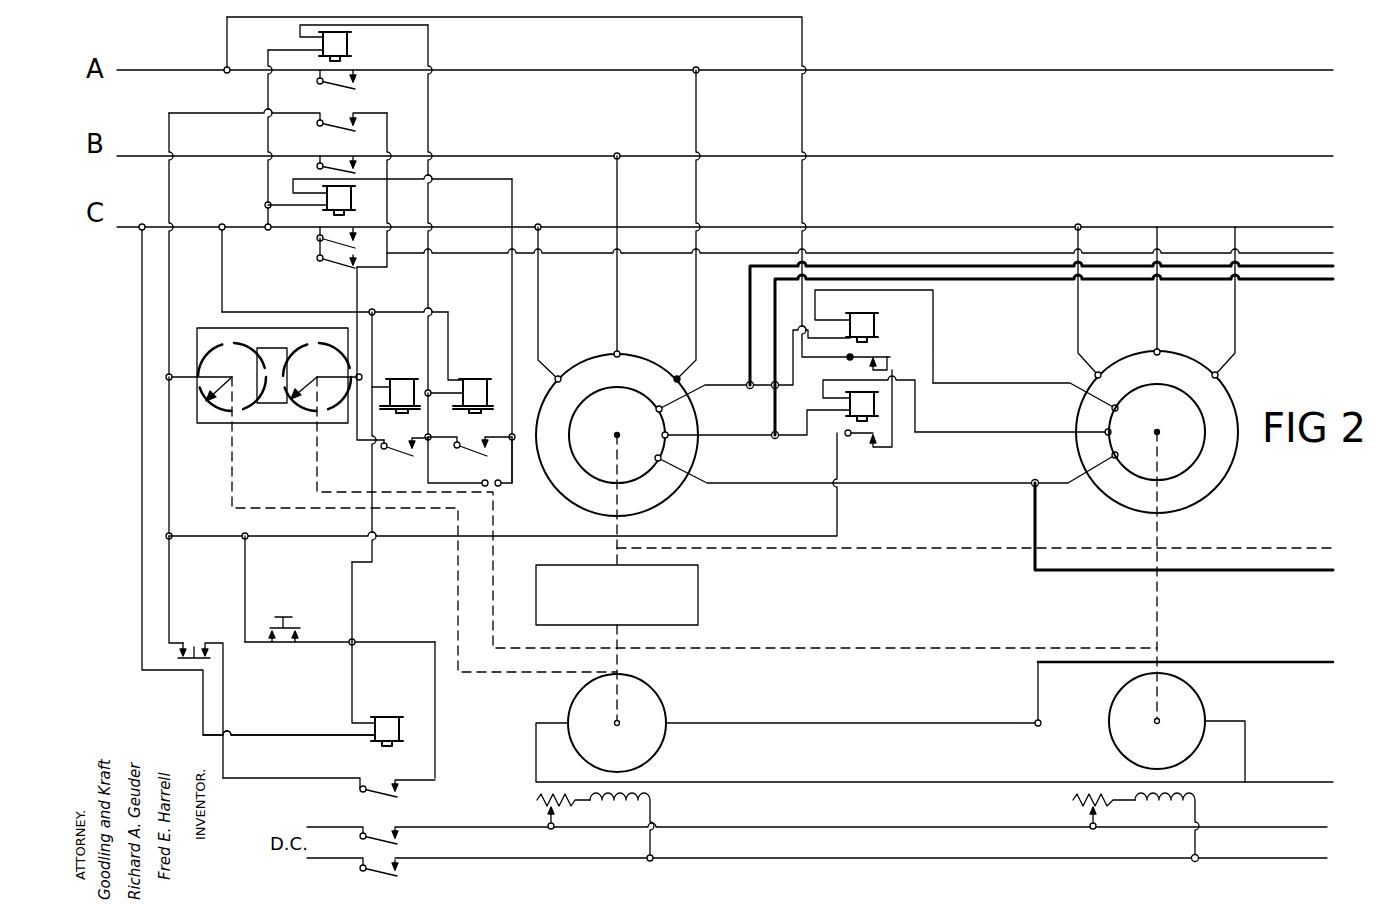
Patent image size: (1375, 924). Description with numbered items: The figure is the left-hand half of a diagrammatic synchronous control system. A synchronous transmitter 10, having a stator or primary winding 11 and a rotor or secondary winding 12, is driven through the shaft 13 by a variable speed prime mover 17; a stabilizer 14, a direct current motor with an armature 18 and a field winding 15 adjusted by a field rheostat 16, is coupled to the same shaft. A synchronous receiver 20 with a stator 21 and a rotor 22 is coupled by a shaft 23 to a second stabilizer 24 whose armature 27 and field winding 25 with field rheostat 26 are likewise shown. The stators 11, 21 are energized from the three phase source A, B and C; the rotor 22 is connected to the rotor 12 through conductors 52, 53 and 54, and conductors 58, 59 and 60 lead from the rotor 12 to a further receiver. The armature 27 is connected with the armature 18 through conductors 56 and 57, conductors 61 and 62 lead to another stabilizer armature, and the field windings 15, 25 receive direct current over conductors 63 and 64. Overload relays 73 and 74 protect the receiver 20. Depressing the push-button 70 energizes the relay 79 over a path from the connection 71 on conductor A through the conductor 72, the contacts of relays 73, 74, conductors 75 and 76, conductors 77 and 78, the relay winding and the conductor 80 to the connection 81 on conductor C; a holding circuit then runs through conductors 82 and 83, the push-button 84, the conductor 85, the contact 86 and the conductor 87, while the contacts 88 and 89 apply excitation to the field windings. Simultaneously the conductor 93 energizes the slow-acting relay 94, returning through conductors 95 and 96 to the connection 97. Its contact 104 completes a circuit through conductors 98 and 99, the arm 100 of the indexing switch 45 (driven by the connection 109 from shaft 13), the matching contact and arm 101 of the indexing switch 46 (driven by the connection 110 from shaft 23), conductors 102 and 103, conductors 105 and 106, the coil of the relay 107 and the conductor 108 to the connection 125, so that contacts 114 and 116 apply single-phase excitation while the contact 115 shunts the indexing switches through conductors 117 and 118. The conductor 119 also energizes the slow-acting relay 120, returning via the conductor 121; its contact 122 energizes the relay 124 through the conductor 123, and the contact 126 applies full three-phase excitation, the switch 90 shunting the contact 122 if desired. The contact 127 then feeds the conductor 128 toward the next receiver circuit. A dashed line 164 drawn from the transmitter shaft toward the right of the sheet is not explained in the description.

The synchronous transmitter 10 is at (662, 342).
The stator or primary winding 11 is at (594, 348).
The rotor or secondary winding 12 is at (612, 388).
The shaft 13 is at (617, 524).
The stabilizer 14 is at (684, 688).
The field winding 15 is at (654, 808).
The field rheostat 16 is at (536, 800).
The variable speed prime mover 17 is at (698, 590).
The armature 18 is at (670, 706).
The synchronous receiver 20 is at (1208, 341).
The stator 21 is at (1120, 352).
The rotor 22 is at (1178, 392).
The shaft 23 is at (1160, 525).
The stabilizer 24 is at (1224, 684).
The field winding 25 is at (1196, 806).
The field rheostat 26 is at (1070, 800).
The armature 27 is at (1208, 714).
The indexing switch 45 is at (240, 373).
The indexing switch 46 is at (328, 371).
The conductor 52 is at (968, 382).
The conductor 53 is at (967, 430).
The conductor 54 is at (967, 484).
The conductor 56 is at (885, 722).
The conductor 57 is at (897, 782).
The conductor 58 is at (1335, 276).
The conductor 59 is at (1341, 283).
The conductor 60 is at (1332, 568).
The conductor 61 is at (1286, 662).
The conductor 62 is at (1282, 780).
The conductor 63 is at (848, 826).
The conductor 64 is at (876, 858).
The push-button 70 is at (293, 624).
The connection 71 is at (225, 62).
The conductor 72 is at (803, 50).
The overload relay 73 is at (873, 326).
The overload relay 74 is at (863, 411).
The conductor 75 is at (428, 546).
The conductor 76 is at (249, 603).
The conductor 77 is at (314, 642).
The conductor 78 is at (352, 683).
The relay 79 is at (396, 732).
The conductor 80 is at (262, 734).
The connection 81 is at (145, 224).
The conductor 82 is at (204, 536).
The conductor 83 is at (171, 622).
The push-button 84 is at (194, 646).
The conductor 85 is at (270, 778).
The contact 86 is at (382, 778).
The conductor 87 is at (436, 724).
The contact 88 is at (364, 826).
The contact 89 is at (366, 866).
The switch 90 is at (497, 485).
The conductor 93 is at (353, 593).
The slow-acting relay 94 is at (404, 378).
The conductor 95 is at (372, 346).
The conductor 96 is at (270, 310).
The connection 97 is at (222, 226).
The conductor 98 is at (169, 474).
The conductor 99 is at (178, 374).
The actuating arm 100 is at (204, 398).
The rotating arm 101 is at (326, 373).
The conductor 102 is at (312, 388).
The conductor 103 is at (358, 440).
The contact 104 is at (399, 452).
The conductor 105 is at (436, 415).
The conductor 106 is at (429, 294).
The relay 107 is at (347, 44).
The conductor 108 is at (268, 150).
The driving connection 109 is at (242, 480).
The driving connection 110 is at (326, 466).
The contact 114 is at (340, 87).
The contact 115 is at (326, 128).
The contact 116 is at (330, 162).
The conductor 117 is at (171, 304).
The conductor 118 is at (389, 144).
The conductor 119 is at (445, 408).
The slow-acting relay 120 is at (476, 378).
The conductor 121 is at (452, 356).
The contact 122 is at (468, 454).
The conductor 123 is at (512, 298).
The relay 124 is at (351, 198).
The connection 125 is at (276, 230).
The contact 126 is at (318, 238).
The contact 127 is at (342, 267).
The conductor 128 is at (452, 256).
The mechanical connection 164 is at (948, 546).